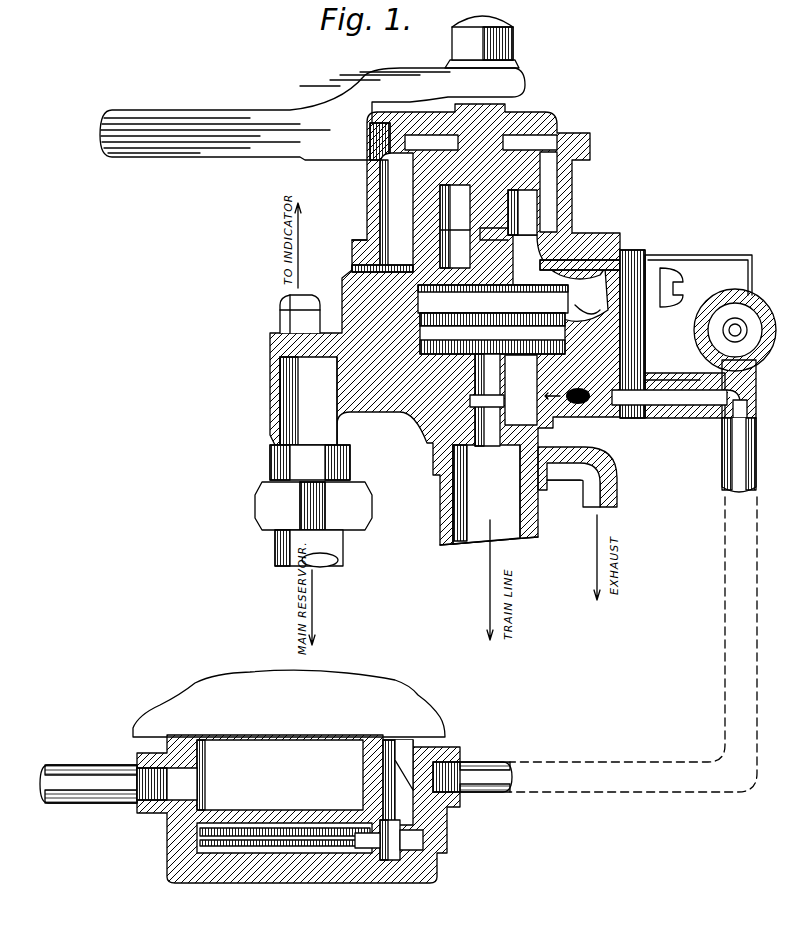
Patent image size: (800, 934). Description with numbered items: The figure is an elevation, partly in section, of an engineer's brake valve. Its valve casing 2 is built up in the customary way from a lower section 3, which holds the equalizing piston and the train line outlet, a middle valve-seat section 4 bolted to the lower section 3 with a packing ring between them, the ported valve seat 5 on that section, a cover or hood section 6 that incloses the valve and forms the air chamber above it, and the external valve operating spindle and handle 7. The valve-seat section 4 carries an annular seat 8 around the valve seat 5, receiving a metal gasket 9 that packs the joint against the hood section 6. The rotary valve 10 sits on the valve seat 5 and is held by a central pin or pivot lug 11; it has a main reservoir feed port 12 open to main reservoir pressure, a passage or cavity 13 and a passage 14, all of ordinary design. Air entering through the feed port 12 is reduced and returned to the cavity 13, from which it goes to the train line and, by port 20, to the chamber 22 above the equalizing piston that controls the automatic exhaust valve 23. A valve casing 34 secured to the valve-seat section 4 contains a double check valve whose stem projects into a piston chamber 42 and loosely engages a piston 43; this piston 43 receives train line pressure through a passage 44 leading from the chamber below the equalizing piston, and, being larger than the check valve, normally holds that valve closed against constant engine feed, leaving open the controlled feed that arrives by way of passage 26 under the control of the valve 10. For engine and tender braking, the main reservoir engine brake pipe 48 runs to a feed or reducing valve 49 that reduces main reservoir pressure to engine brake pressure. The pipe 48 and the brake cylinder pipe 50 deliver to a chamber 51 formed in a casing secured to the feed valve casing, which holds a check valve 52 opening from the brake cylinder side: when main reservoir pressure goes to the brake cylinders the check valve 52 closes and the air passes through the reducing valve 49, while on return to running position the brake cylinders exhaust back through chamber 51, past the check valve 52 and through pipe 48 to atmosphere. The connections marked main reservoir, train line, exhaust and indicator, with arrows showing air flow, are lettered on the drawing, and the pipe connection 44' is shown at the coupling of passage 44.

The valve casing 2 is at (312, 136).
The lower section 3 is at (410, 435).
The valve-seat section 4 is at (632, 260).
The ported valve seat 5 is at (572, 236).
The cover or hood section 6 is at (572, 196).
The valve operating spindle and handle 7 is at (447, 72).
The annular seat 8 is at (352, 266).
The metal gasket 9 is at (360, 255).
The valve 10 is at (400, 205).
The central pin or pivot lug 11 is at (505, 241).
The main reservoir feed port 12 is at (455, 242).
The passage or cavity 13 is at (522, 212).
The passage 14 is at (455, 226).
The port 20 is at (576, 299).
The chamber 22 is at (493, 319).
The automatic exhaust valve 23 is at (510, 402).
The passage 26 is at (560, 222).
The valve casing 34 is at (720, 262).
The piston chamber 42 is at (695, 333).
The piston 43 is at (735, 308).
The passage 44 is at (684, 403).
The pipe connection 44' is at (757, 310).
The main reservoir engine brake pipe 48 is at (724, 487).
The feed or reducing valve 49 is at (405, 702).
The brake cylinder pipe 50 is at (106, 778).
The chamber 51 is at (292, 833).
The check valve 52 is at (397, 880).